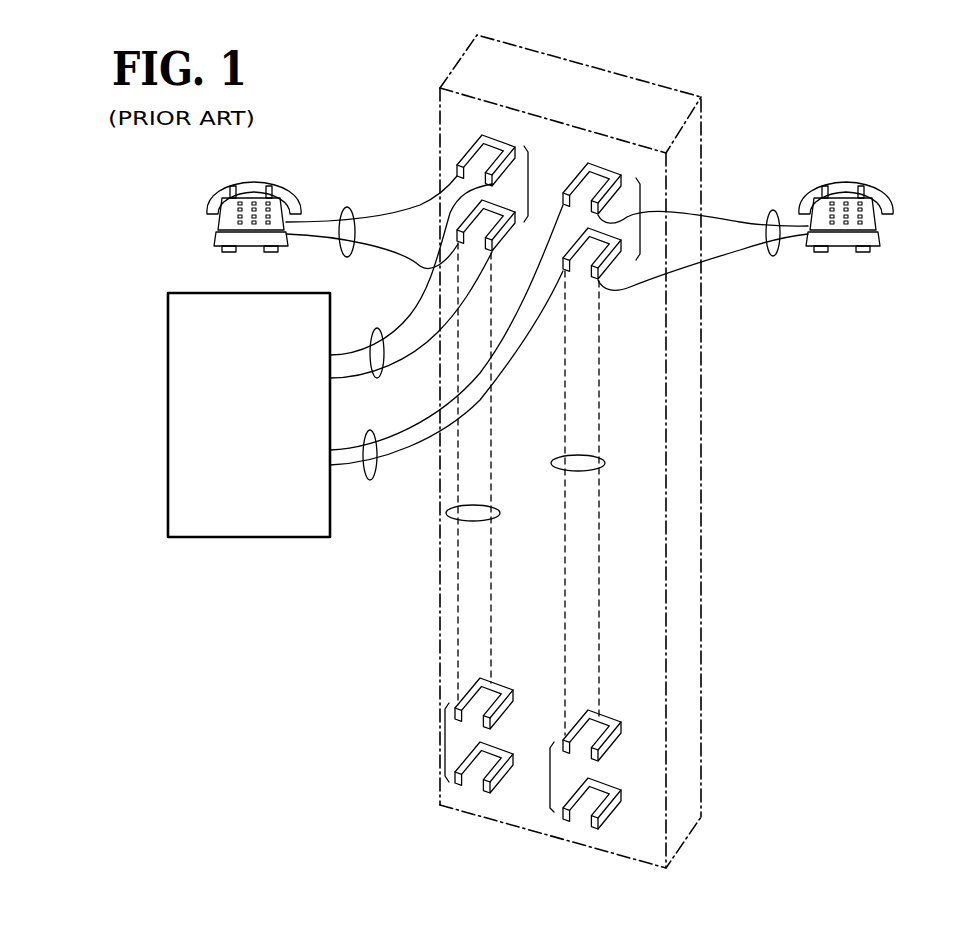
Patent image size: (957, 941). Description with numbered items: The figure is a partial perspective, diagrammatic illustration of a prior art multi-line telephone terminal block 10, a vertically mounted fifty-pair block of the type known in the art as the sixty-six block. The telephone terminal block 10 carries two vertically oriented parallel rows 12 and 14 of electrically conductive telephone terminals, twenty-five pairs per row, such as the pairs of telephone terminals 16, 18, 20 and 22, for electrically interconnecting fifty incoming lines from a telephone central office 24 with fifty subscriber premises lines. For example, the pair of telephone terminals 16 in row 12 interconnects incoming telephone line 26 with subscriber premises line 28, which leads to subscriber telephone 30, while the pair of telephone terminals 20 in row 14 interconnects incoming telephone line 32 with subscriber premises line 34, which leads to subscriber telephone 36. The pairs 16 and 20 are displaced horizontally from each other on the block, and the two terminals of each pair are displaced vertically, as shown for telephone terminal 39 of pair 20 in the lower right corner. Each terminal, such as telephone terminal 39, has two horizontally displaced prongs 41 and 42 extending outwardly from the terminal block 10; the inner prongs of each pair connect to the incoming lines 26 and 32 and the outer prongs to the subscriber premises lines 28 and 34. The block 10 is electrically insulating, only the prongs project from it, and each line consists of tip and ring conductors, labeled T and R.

The telephone terminal block 10 is at (703, 408).
The row of telephone terminals 12 is at (447, 513).
The row of telephone terminals 14 is at (604, 462).
The pair of telephone terminals 16 is at (528, 184).
The pair of telephone terminals 18 is at (445, 740).
The pair of telephone terminals 20 is at (640, 213).
The pair of telephone terminals 22 is at (550, 778).
The telephone central office 24 is at (168, 395).
The incoming telephone line 26 is at (377, 380).
The subscriber premises line 28 is at (345, 212).
The subscriber telephone 30 is at (203, 232).
The incoming telephone line 32 is at (373, 480).
The subscriber premises line 34 is at (776, 210).
The subscriber telephone 36 is at (847, 253).
The telephone terminal 39 is at (621, 803).
The prong 41 is at (563, 823).
The prong 42 is at (595, 833).